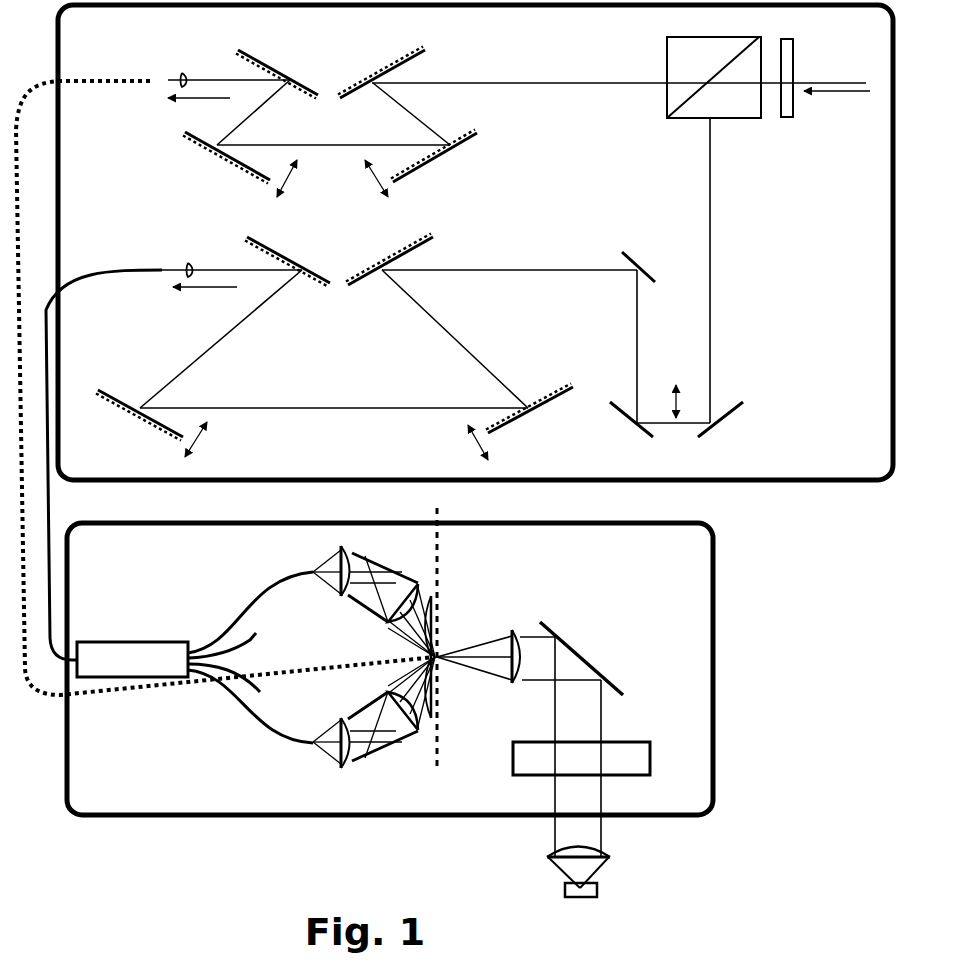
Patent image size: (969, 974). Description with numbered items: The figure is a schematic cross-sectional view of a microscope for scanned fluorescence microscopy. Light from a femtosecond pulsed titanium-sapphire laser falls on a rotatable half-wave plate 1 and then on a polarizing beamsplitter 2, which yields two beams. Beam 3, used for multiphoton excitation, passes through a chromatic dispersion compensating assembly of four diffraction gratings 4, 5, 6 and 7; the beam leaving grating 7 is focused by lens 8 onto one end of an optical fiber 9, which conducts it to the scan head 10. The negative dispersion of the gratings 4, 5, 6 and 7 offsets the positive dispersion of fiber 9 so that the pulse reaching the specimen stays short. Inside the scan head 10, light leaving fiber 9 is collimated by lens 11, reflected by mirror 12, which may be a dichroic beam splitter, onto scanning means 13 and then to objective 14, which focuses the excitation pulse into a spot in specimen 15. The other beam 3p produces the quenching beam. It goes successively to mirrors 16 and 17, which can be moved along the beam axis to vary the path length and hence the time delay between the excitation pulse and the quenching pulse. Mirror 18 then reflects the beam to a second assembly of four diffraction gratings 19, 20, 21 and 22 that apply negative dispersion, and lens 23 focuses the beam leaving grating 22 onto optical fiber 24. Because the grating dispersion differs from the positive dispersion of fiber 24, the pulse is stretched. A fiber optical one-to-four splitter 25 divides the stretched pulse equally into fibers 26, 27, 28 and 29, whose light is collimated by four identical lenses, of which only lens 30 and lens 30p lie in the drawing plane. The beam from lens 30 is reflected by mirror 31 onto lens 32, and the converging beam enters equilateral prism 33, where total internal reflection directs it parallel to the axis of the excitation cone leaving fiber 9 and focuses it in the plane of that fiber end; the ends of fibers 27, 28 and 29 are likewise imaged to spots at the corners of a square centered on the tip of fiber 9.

The rotatable half-wave plate 1 is at (788, 120).
The polarizing beamsplitter 2 is at (667, 120).
The beam 3 is at (563, 82).
The beam 3p is at (710, 240).
The diffraction grating 4 is at (393, 65).
The diffraction grating 5 is at (465, 143).
The diffraction grating 6 is at (232, 165).
The diffraction grating 7 is at (267, 62).
The lens 8 is at (183, 78).
The optical fiber 9 is at (93, 76).
The scan head 10 is at (200, 818).
The lens 11 is at (518, 625).
The mirror 12 is at (625, 690).
The scanning means 13 is at (650, 758).
The objective 14 is at (605, 855).
The specimen 15 is at (597, 890).
The mirror 16 is at (708, 432).
The mirror 17 is at (633, 432).
The mirror 18 is at (632, 262).
The diffraction grating 19 is at (412, 243).
The diffraction grating 20 is at (555, 390).
The diffraction grating 21 is at (122, 397).
The diffraction grating 22 is at (282, 255).
The lens 23 is at (185, 265).
The optical fiber 24 is at (95, 280).
The fiber optical 1:4 splitter 25 is at (140, 640).
The fiber 26 is at (278, 575).
The fiber 27 is at (256, 635).
The fiber 28 is at (244, 676).
The fiber 29 is at (258, 722).
The lens 30 is at (336, 556).
The lens 30p is at (335, 768).
The mirror 31 is at (388, 566).
The lens 32 is at (432, 596).
The equilateral prism 33 is at (440, 615).